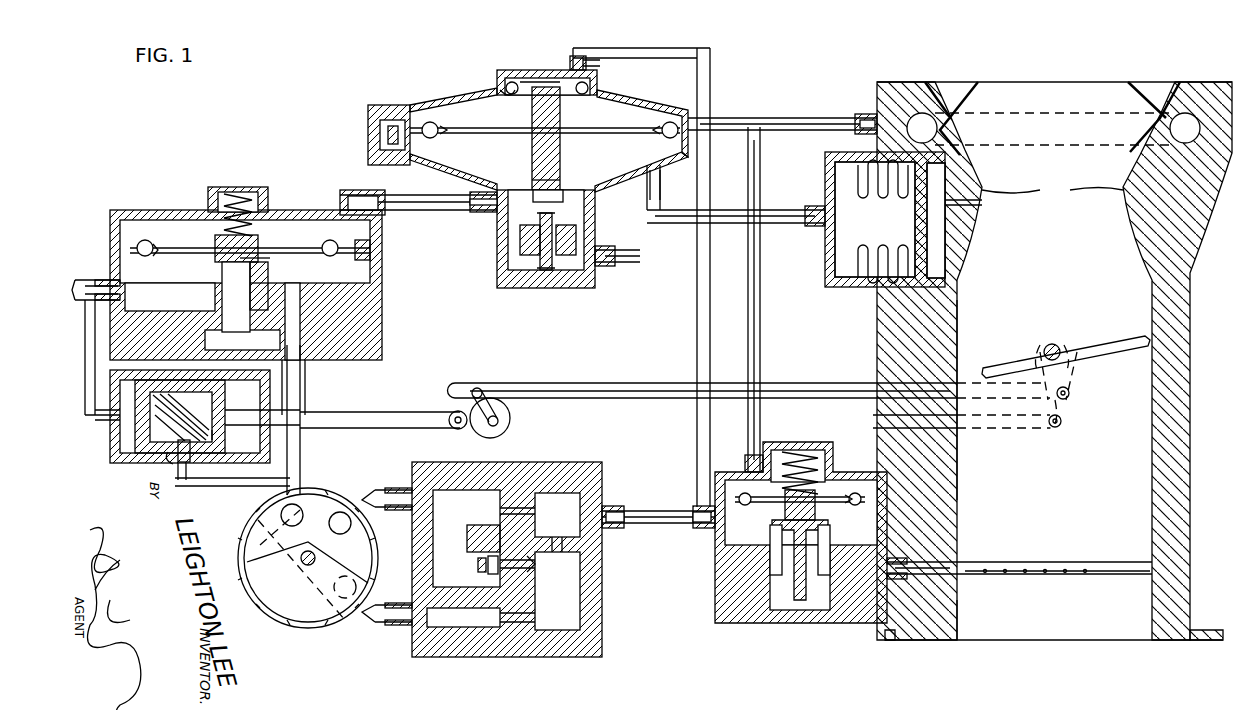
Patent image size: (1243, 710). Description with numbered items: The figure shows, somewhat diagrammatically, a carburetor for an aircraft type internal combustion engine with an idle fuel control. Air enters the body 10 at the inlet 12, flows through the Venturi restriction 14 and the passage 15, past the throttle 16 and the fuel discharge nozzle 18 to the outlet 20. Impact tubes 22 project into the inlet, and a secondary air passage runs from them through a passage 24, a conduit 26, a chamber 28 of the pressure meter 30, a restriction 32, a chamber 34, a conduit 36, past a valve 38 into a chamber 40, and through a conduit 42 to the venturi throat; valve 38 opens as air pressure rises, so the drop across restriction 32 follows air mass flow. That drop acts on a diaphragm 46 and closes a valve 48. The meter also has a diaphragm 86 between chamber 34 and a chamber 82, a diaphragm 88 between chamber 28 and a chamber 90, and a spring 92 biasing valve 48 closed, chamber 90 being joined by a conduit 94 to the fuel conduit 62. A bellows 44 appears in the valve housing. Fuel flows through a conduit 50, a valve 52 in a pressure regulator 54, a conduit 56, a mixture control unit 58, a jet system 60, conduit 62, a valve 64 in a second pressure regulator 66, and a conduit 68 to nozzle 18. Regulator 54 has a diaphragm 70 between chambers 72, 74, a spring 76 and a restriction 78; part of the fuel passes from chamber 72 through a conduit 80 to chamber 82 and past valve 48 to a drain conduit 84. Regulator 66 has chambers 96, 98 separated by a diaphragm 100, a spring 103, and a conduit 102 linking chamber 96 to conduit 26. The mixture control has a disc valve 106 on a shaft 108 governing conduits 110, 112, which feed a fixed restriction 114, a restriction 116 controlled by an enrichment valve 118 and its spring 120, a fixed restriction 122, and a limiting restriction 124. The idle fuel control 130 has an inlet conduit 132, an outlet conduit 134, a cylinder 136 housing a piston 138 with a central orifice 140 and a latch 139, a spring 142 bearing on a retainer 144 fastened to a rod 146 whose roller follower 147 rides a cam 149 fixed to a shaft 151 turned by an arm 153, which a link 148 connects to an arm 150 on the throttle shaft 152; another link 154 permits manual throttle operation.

The body 10 is at (925, 328).
The inlet 12 is at (1064, 84).
The Venturi restriction 14 is at (1052, 191).
The passage 15 is at (1105, 307).
The throttle 16 is at (1125, 347).
The fuel discharge nozzle 18 is at (1090, 562).
The outlet 20 is at (1068, 627).
The impact tubes 22 is at (970, 82).
The passage 24 is at (994, 108).
The conduit 26 is at (778, 118).
The chamber 28 is at (567, 150).
The pressure meter 30 is at (403, 77).
The restriction 32 is at (370, 130).
The chamber 34 is at (567, 161).
The conduit 36 is at (670, 220).
The valve 38 is at (845, 235).
The chamber 40 is at (875, 219).
The conduit 42 is at (968, 210).
The bellows 44 is at (882, 246).
The diaphragm 46 is at (500, 135).
The valve 48 is at (568, 232).
The conduit 50 is at (82, 280).
The valve 52 is at (212, 298).
The pressure regulator 54 is at (184, 195).
The conduit 56 is at (302, 447).
The mixture control unit 58 is at (304, 648).
The jet system 60 is at (474, 658).
The conduit 62 is at (662, 529).
The valve 64 is at (838, 506).
The second pressure regulator 66 is at (742, 642).
The conduit 68 is at (905, 560).
The diaphragm 70 is at (148, 252).
The expansible chamber 72 is at (250, 243).
The expansible chamber 74 is at (225, 265).
The spring 76 is at (238, 202).
The restriction 78 is at (382, 258).
The conduit 80 is at (457, 210).
The chamber 82 is at (518, 222).
The drain conduit 84 is at (624, 262).
The diaphragm 86 is at (654, 175).
The diaphragm 88 is at (505, 91).
The expansible chamber 90 is at (515, 73).
The spring 92 is at (578, 56).
The conduit 94 is at (711, 78).
The expansible chamber 96 is at (846, 472).
The expansible chamber 98 is at (732, 540).
The flexible diaphragm 100 is at (742, 504).
The conduit 102 is at (760, 312).
The spring 103 is at (806, 446).
The disc valve 106 is at (307, 562).
The shaft 108 is at (310, 565).
The conduit 110 is at (387, 488).
The conduit 112 is at (383, 604).
The fixed restriction 114 is at (490, 507).
The restriction 116 is at (537, 576).
The enrichment valve 118 is at (538, 566).
The spring 120 is at (480, 570).
The fixed restriction 122 is at (495, 617).
The restriction 124 is at (559, 540).
The idle fuel control 130 is at (112, 452).
The inlet conduit 132 is at (96, 418).
The outlet conduit 134 is at (232, 480).
The cylinder 136 is at (306, 390).
The piston 138 is at (192, 482).
The latch 139 is at (178, 470).
The orifice 140 is at (162, 450).
The spring 142 is at (212, 393).
The retainer 144 is at (215, 441).
The rod 146 is at (315, 410).
The roller follower 147 is at (453, 427).
The link 148 is at (584, 382).
The cam 149 is at (500, 430).
The arm 150 is at (1073, 388).
The shaft 151 is at (498, 422).
The shaft 152 is at (1058, 342).
The arm 153 is at (500, 410).
The link 154 is at (878, 428).